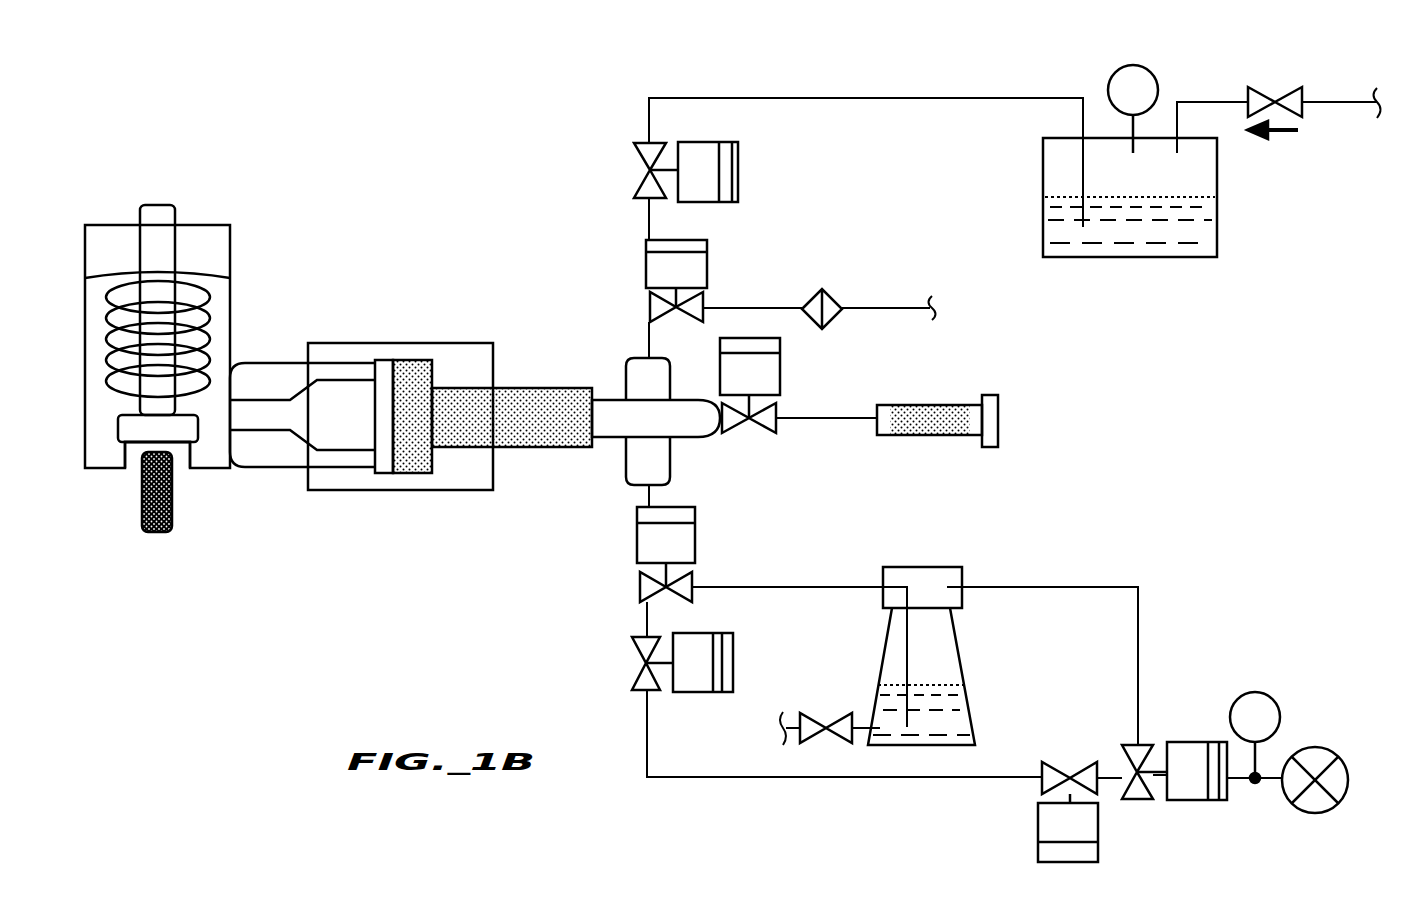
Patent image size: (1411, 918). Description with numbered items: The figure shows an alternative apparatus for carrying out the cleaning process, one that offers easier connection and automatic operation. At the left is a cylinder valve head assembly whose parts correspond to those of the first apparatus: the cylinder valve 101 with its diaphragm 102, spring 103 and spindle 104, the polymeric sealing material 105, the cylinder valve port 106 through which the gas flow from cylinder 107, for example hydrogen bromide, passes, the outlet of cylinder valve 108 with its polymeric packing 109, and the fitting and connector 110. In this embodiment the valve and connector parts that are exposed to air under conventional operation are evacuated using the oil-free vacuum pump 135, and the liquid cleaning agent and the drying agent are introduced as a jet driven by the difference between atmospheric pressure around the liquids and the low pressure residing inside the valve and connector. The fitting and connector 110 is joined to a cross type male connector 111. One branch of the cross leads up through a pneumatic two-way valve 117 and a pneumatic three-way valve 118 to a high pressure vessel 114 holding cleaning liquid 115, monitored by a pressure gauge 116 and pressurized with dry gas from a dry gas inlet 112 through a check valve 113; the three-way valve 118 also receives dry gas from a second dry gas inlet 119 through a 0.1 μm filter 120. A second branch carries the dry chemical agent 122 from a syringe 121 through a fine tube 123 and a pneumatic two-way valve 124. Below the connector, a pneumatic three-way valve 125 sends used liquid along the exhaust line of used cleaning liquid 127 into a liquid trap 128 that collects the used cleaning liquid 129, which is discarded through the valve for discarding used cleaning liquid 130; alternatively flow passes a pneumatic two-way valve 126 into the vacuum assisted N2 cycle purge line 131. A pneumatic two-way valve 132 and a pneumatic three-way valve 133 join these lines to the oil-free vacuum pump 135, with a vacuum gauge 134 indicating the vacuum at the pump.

The cylinder valve 101 is at (156, 204).
The diaphragm 102 is at (215, 276).
The spring 103 is at (213, 298).
The spindle 104 is at (205, 333).
The polymeric sealing material 105 is at (178, 430).
The cylinder valve port 106 is at (150, 445).
The gas flow from cylinder 107 is at (172, 523).
The outlet of cylinder valve 108 is at (308, 428).
The polymeric packing 109 is at (383, 463).
The fitting and connector 110 is at (413, 365).
The cross type male connector 111 is at (618, 408).
The dry gas inlet 112 is at (1377, 118).
The check valve 113 is at (1263, 88).
The high pressure vessel 114 is at (1218, 180).
The cleaning liquid 115 is at (1122, 250).
The pressure gauge 116 is at (1140, 65).
The pneumatic two-way valve 117 is at (640, 178).
The pneumatic three-way valve 118 is at (645, 310).
The dry gas inlet 119 is at (935, 305).
The 0.1 μm filter 120 is at (830, 290).
The syringe 121 is at (1000, 415).
The dry chemical agent 122 is at (912, 405).
The fine tube 123 is at (808, 415).
The pneumatic two-way valve 124 is at (757, 430).
The pneumatic three-way valve 125 is at (640, 588).
The pneumatic two-way valve 126 is at (638, 668).
The exhaust line of used cleaning liquid 127 is at (758, 587).
The liquid trap 128 is at (963, 660).
The used cleaning liquid 129 is at (955, 725).
The valve for discarding used cleaning liquid 130 is at (840, 718).
The vacuum assisted N2 cycle purge line 131 is at (675, 777).
The pneumatic two-way valve 132 is at (1078, 765).
The pneumatic three-way valve 133 is at (1135, 797).
The vacuum gauge 134 is at (1258, 692).
The oil-free vacuum pump 135 is at (1313, 815).